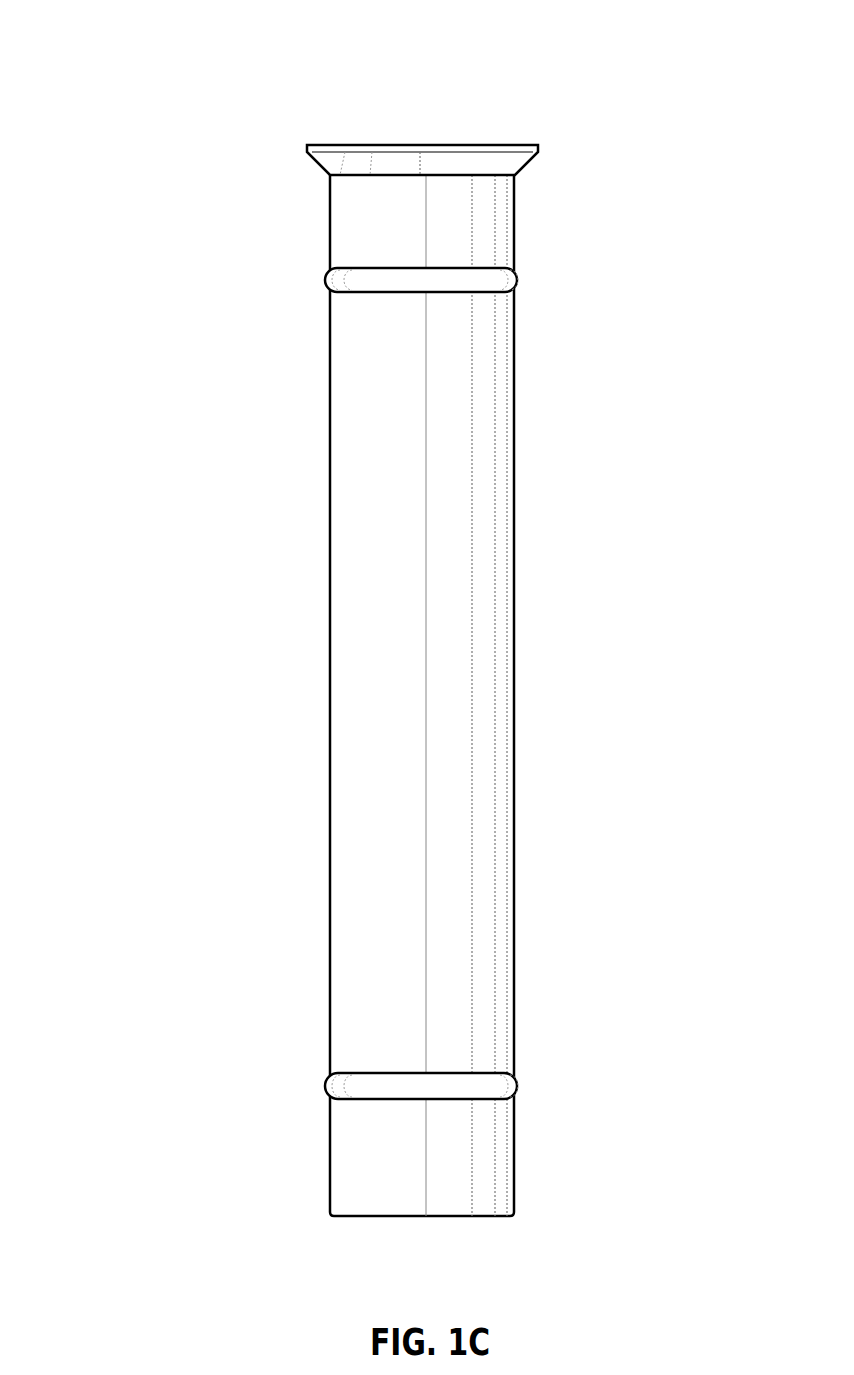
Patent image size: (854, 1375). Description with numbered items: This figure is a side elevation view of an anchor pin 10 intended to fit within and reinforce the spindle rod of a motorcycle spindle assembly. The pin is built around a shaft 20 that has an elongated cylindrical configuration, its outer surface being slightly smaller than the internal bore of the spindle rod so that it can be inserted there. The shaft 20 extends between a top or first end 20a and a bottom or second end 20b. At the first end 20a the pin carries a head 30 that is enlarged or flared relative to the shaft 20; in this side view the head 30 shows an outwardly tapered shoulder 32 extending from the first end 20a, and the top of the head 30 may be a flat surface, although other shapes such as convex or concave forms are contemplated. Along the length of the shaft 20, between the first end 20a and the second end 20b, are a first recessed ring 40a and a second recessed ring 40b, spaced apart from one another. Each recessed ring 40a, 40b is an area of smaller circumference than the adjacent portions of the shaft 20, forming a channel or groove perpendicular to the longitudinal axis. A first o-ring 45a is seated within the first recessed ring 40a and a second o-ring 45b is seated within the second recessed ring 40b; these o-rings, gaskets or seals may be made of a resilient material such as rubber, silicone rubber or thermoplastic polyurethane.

The anchor pin 10 is at (442, 42).
The shaft 20 is at (338, 695).
The first end 20a is at (283, 221).
The second end 20b is at (309, 1158).
The head 30 is at (555, 150).
The tapered shoulder 32 is at (341, 148).
The first recessed ring 40a is at (358, 295).
The second recessed ring 40b is at (382, 1072).
The first o-ring 45a is at (453, 277).
The second o-ring 45b is at (455, 1087).